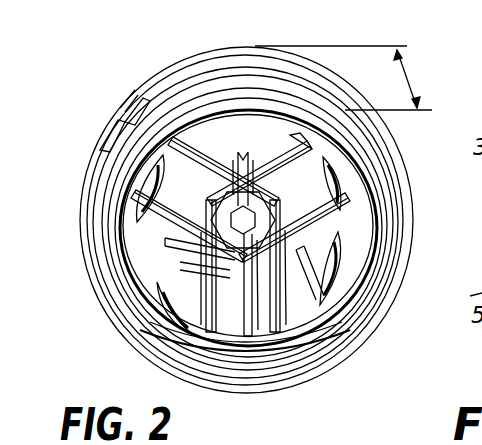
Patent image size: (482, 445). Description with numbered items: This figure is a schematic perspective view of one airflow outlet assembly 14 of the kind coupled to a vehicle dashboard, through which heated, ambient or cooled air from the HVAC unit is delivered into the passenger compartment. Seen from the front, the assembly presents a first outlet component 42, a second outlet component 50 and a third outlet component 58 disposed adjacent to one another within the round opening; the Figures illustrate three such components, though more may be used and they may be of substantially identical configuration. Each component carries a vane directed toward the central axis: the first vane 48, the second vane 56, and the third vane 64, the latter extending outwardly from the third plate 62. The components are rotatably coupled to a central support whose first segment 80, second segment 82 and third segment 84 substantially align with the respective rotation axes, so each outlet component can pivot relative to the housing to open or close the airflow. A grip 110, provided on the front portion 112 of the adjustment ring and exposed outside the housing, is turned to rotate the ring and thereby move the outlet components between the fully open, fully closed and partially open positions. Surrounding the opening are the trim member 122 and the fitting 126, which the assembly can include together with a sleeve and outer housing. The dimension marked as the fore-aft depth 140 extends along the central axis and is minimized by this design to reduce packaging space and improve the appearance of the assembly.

The airflow outlet assembly 14 is at (87, 121).
The first outlet component 42 is at (320, 213).
The first vane 48 is at (302, 182).
The second outlet component 50 is at (173, 236).
The second vane 56 is at (192, 183).
The third outlet component 58 is at (290, 311).
The third plate 62 is at (193, 305).
The third vane 64 is at (263, 310).
The first segment 80 is at (252, 208).
The second segment 82 is at (243, 217).
The third segment 84 is at (230, 260).
The grip 110 is at (347, 292).
The front portion 112 is at (372, 247).
The trim member 122 is at (100, 298).
The fitting 126 is at (221, 66).
The fore-aft depth 140 is at (406, 76).